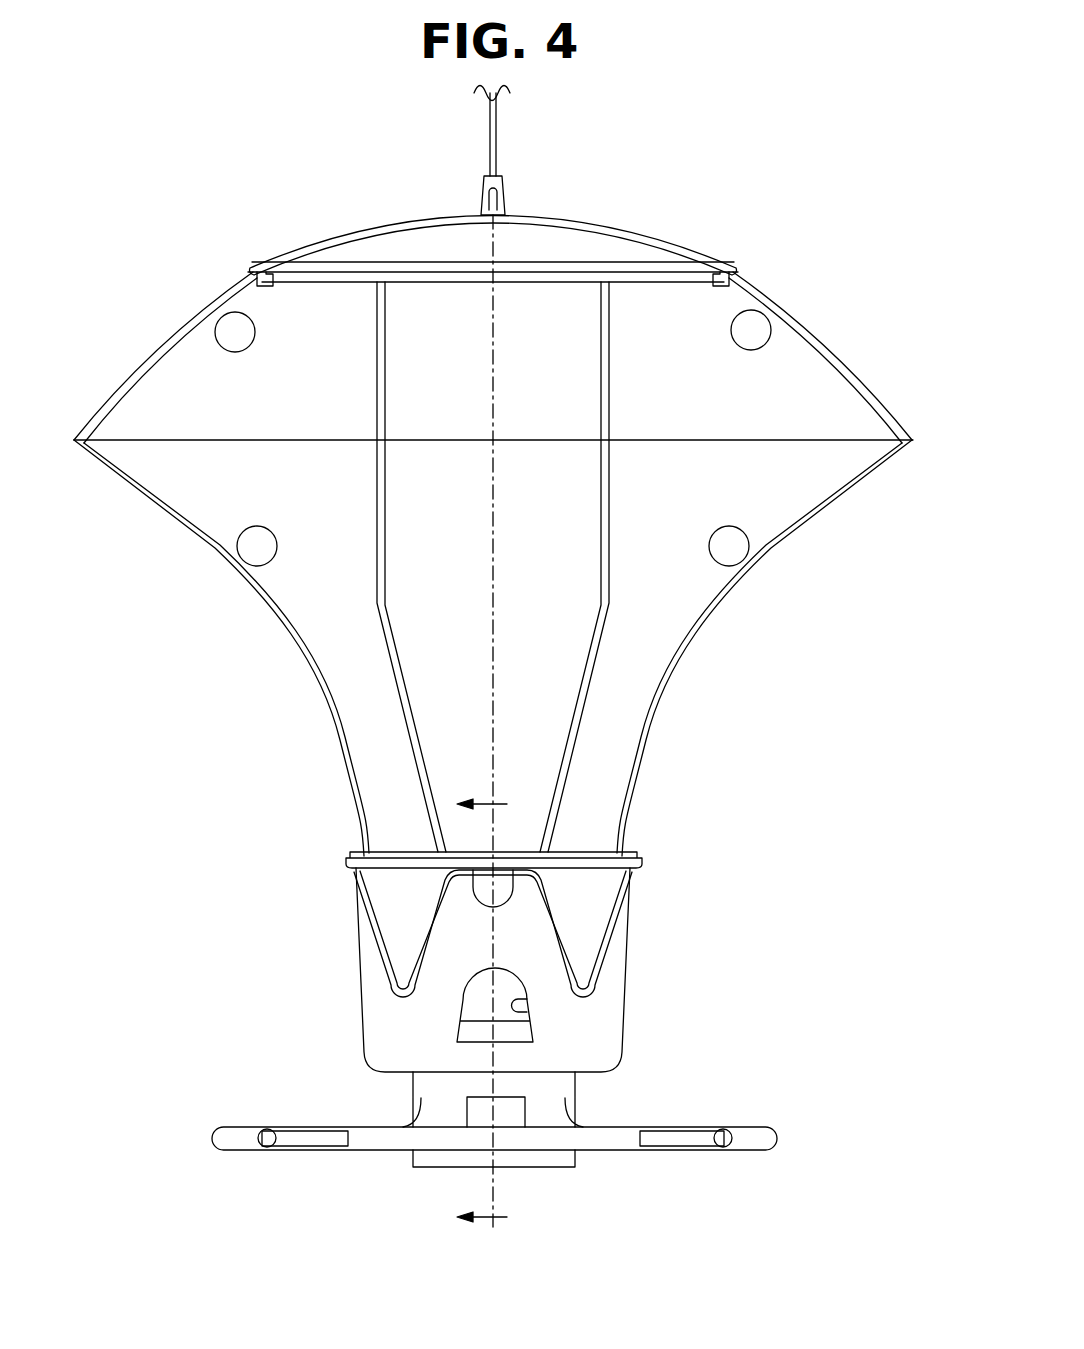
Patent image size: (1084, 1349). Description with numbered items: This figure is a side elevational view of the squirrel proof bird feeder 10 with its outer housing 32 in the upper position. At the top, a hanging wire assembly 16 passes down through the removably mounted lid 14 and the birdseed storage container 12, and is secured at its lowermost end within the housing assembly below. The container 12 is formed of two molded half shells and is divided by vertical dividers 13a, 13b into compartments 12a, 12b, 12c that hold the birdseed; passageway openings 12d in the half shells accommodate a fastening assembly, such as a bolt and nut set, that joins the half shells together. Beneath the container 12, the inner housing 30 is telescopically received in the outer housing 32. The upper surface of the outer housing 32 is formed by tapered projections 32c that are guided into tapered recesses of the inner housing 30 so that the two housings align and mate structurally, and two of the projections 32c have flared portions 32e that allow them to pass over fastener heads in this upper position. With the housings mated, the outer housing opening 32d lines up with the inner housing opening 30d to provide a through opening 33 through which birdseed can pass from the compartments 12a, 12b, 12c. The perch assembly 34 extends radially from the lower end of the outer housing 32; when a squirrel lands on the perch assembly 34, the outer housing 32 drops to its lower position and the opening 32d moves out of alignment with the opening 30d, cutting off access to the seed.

The bird feeder 10 is at (772, 238).
The birdseed storage container 12 is at (705, 655).
The compartment 12a is at (279, 400).
The compartment 12b is at (582, 400).
The compartment 12c is at (727, 400).
The passageway openings 12d is at (256, 333).
The vertical divider 13a is at (377, 480).
The vertical divider 13b is at (609, 480).
The lid 14 is at (550, 244).
The hanging wire assembly 16 is at (510, 130).
The inner housing 30 is at (660, 864).
The inner housing opening 30d is at (530, 1012).
The outer housing 32 is at (640, 1045).
The tapered projections 32c is at (450, 945).
The outer housing opening 32d is at (515, 964).
The flared portions 32e is at (507, 884).
The through opening 33 is at (445, 1005).
The perch assembly 34 is at (795, 1133).